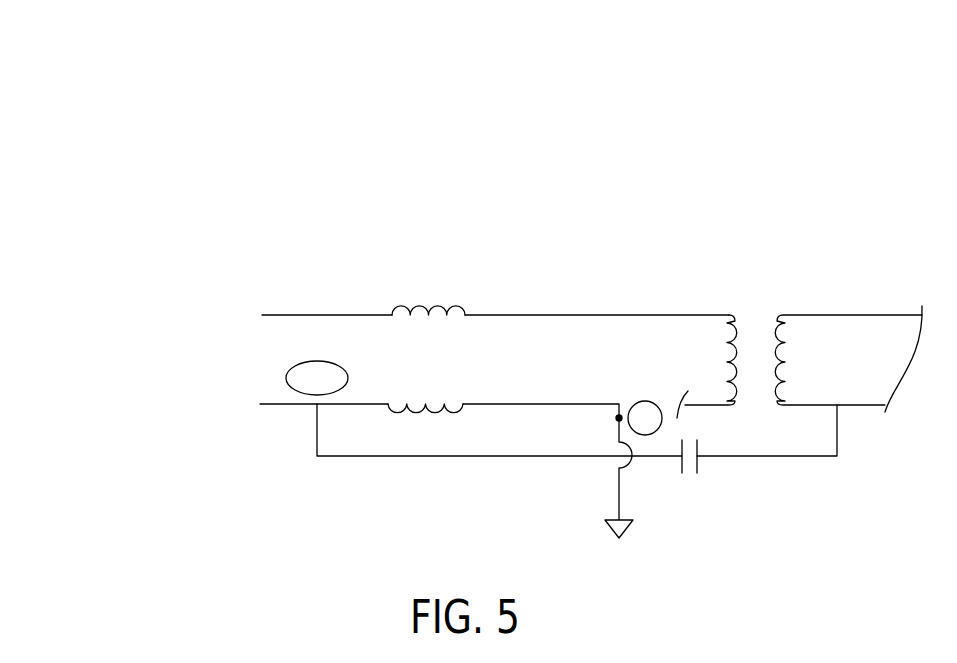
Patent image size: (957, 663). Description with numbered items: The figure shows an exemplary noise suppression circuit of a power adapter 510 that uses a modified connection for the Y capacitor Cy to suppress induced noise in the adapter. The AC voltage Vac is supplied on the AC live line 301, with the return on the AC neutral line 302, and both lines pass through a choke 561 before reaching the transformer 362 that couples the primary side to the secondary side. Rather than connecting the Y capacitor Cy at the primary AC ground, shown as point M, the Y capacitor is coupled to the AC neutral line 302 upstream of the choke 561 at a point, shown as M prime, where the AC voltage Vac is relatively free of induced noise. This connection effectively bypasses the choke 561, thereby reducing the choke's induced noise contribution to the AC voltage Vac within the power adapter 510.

The power adapter 510 is at (125, 145).
The AC live line 301 is at (277, 313).
The AC neutral line 302 is at (282, 407).
The choke 561 is at (430, 294).
The transformer 362 is at (753, 317).